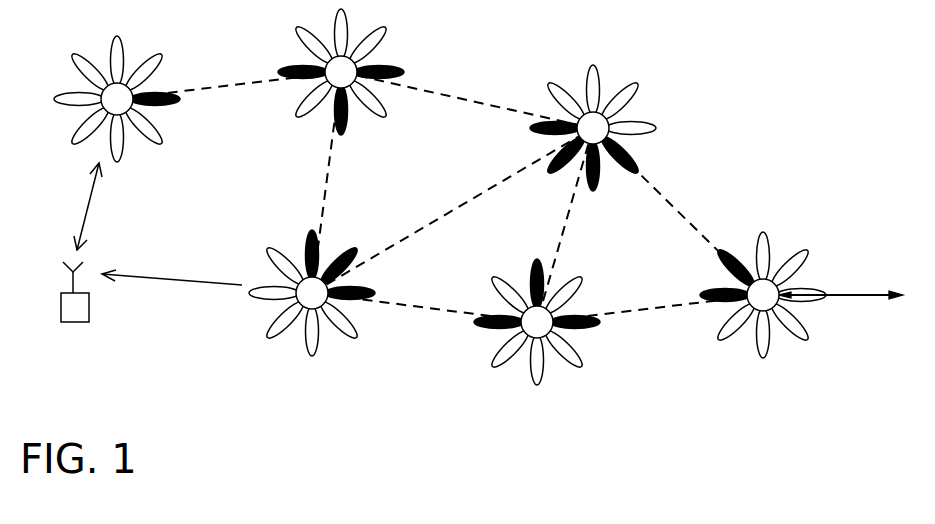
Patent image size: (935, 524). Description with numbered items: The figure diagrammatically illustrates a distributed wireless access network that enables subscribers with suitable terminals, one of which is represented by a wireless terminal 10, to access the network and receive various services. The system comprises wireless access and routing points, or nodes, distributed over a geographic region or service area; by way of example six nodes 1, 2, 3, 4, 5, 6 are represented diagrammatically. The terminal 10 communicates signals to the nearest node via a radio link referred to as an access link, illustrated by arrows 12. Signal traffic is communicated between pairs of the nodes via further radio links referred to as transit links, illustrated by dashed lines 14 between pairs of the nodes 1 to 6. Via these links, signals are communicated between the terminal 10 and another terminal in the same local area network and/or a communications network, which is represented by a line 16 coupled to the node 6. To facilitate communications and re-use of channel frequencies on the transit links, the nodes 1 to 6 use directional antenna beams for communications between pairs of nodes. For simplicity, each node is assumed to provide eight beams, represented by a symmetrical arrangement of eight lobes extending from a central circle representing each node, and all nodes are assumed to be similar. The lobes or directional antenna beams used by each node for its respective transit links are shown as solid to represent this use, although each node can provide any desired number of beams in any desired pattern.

The node 1 is at (117, 99).
The node 2 is at (341, 72).
The node 3 is at (312, 293).
The node 4 is at (593, 128).
The node 5 is at (537, 322).
The node 6 is at (763, 295).
The wireless terminal 10 is at (79, 322).
The access link 12 is at (87, 213).
The transit links 14 is at (327, 177).
The communications network line 16 is at (862, 293).